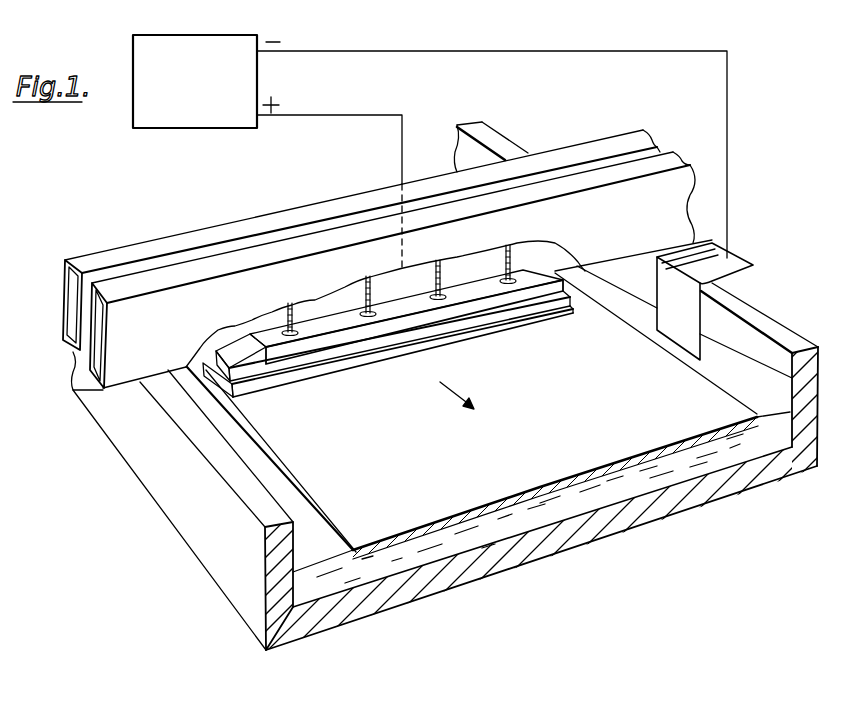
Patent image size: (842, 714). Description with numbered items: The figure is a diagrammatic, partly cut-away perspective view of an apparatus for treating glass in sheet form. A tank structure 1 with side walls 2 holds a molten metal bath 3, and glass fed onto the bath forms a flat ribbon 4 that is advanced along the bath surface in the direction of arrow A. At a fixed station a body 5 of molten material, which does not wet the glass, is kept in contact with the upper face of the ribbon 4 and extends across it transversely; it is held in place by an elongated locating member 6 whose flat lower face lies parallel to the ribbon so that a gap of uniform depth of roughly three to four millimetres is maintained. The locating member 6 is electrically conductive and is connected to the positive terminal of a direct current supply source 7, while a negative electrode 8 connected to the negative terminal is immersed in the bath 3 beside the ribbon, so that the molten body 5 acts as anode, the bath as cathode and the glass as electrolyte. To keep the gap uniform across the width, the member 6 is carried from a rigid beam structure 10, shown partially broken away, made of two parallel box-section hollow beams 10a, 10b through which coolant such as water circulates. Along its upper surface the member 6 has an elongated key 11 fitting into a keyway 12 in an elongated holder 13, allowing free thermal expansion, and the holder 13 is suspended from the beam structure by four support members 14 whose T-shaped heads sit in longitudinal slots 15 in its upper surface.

The tank 1 is at (547, 545).
The side walls 2 is at (772, 332).
The bath 3 is at (637, 478).
The ribbon 4 is at (386, 543).
The body of molten material 5 is at (280, 385).
The locating member 6 is at (393, 347).
The direct current supply source 7 is at (193, 128).
The negative electrode 8 is at (694, 336).
The beam structure 10 is at (387, 256).
The box-section hollow beam 10a is at (197, 254).
The box-section hollow beam 10b is at (125, 241).
The key 11 is at (215, 355).
The keyway 12 is at (254, 346).
The holder 13 is at (500, 306).
The support members 14 is at (365, 292).
The slots 15 is at (437, 297).
The arrow A is at (465, 406).